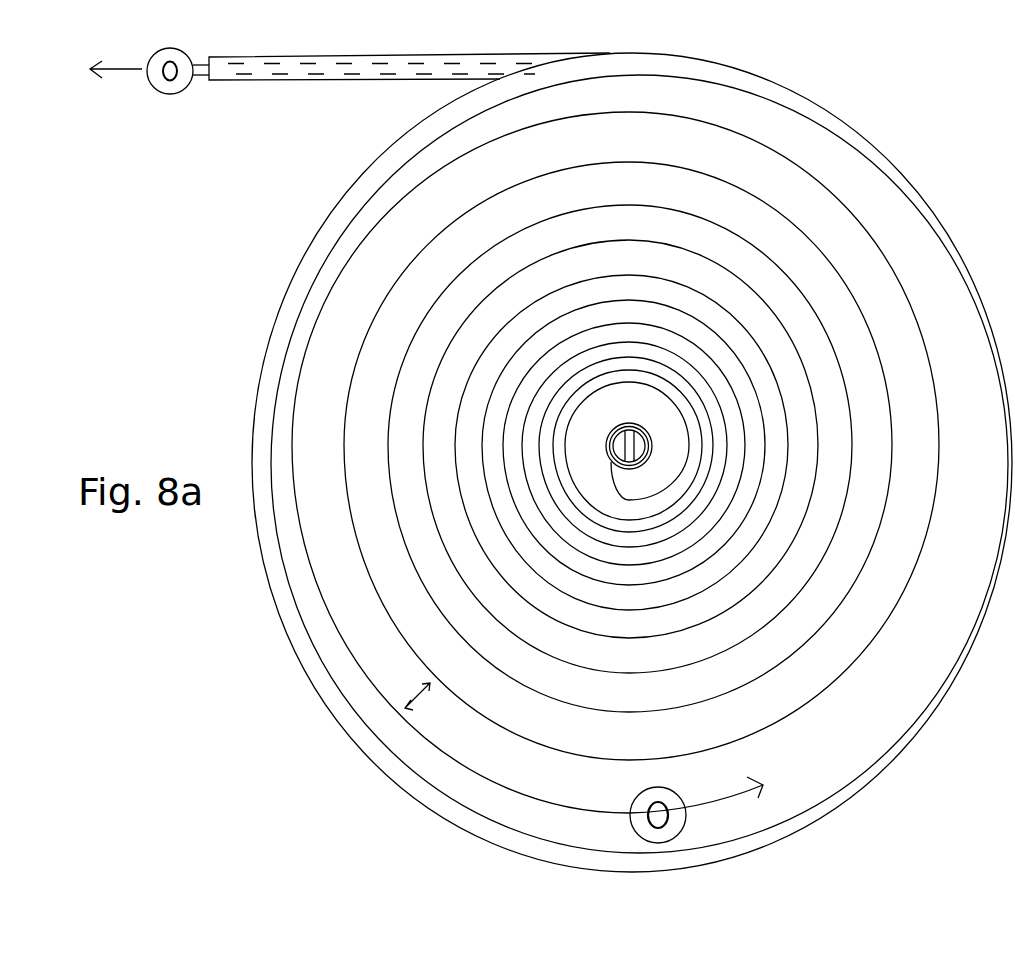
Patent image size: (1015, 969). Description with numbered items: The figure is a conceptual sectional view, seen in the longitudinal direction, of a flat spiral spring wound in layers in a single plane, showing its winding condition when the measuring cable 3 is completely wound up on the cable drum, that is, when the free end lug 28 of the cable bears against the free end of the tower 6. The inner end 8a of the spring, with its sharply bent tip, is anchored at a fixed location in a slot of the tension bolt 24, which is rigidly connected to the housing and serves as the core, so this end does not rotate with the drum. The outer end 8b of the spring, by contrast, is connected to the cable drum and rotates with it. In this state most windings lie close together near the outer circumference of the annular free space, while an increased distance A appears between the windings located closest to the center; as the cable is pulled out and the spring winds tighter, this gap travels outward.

The inner end of the spring 8a is at (631, 441).
The tension bolt 24 is at (636, 454).
The outer end of the spring 8b is at (687, 793).
The tower 6 is at (223, 82).
The measuring cable 3 is at (270, 72).
The end lug 28 is at (152, 100).
The distance between windings A is at (408, 688).